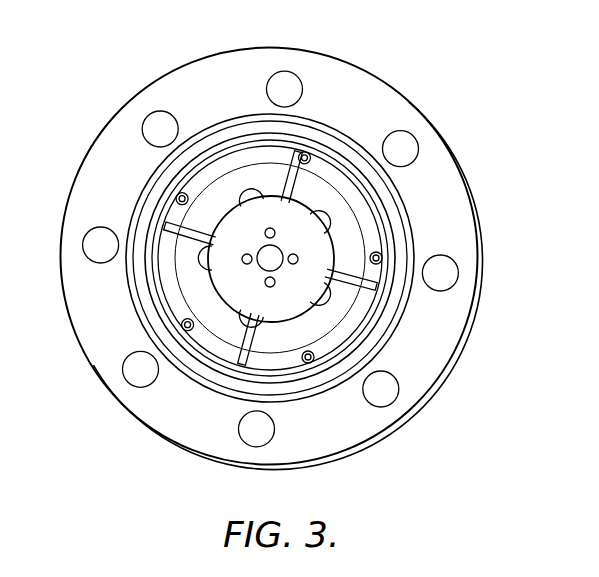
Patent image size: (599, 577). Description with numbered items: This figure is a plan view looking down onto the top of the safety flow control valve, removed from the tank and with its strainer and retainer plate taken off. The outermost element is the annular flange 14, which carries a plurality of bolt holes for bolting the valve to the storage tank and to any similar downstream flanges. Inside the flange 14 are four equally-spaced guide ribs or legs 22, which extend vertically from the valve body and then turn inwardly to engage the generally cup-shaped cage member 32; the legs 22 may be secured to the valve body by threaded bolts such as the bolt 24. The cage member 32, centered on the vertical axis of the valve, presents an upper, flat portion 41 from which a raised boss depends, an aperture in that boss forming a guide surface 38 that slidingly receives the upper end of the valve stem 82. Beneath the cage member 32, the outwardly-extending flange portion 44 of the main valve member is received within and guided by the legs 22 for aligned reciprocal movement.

The annular flange 14 is at (370, 72).
The guide ribs or legs 22 is at (360, 233).
The threaded bolt 24 is at (381, 255).
The flange portion 44 is at (190, 279).
The cage member 32 is at (213, 288).
The valve stem 82 is at (266, 253).
The upper flat portion 41 is at (307, 238).
The second guide surface 38 is at (278, 265).